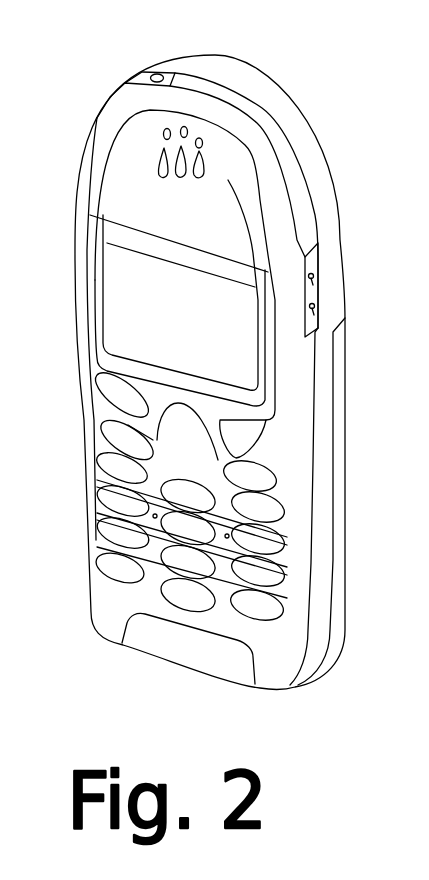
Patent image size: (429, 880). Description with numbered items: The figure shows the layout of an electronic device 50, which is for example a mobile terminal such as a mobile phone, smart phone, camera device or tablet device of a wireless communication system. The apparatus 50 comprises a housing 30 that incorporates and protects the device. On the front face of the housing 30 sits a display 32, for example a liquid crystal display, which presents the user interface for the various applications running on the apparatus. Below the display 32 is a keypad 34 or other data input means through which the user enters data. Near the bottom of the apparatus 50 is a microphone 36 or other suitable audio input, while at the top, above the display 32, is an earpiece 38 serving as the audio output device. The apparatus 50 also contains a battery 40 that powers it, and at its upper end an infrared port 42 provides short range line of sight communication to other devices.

The housing 30 is at (323, 193).
The display 32 is at (242, 362).
The keypad 34 is at (257, 610).
The microphone 36 is at (140, 640).
The earpiece 38 is at (160, 157).
The battery 40 is at (337, 597).
The infrared port 42 is at (202, 85).
The electronic device 50 is at (299, 66).